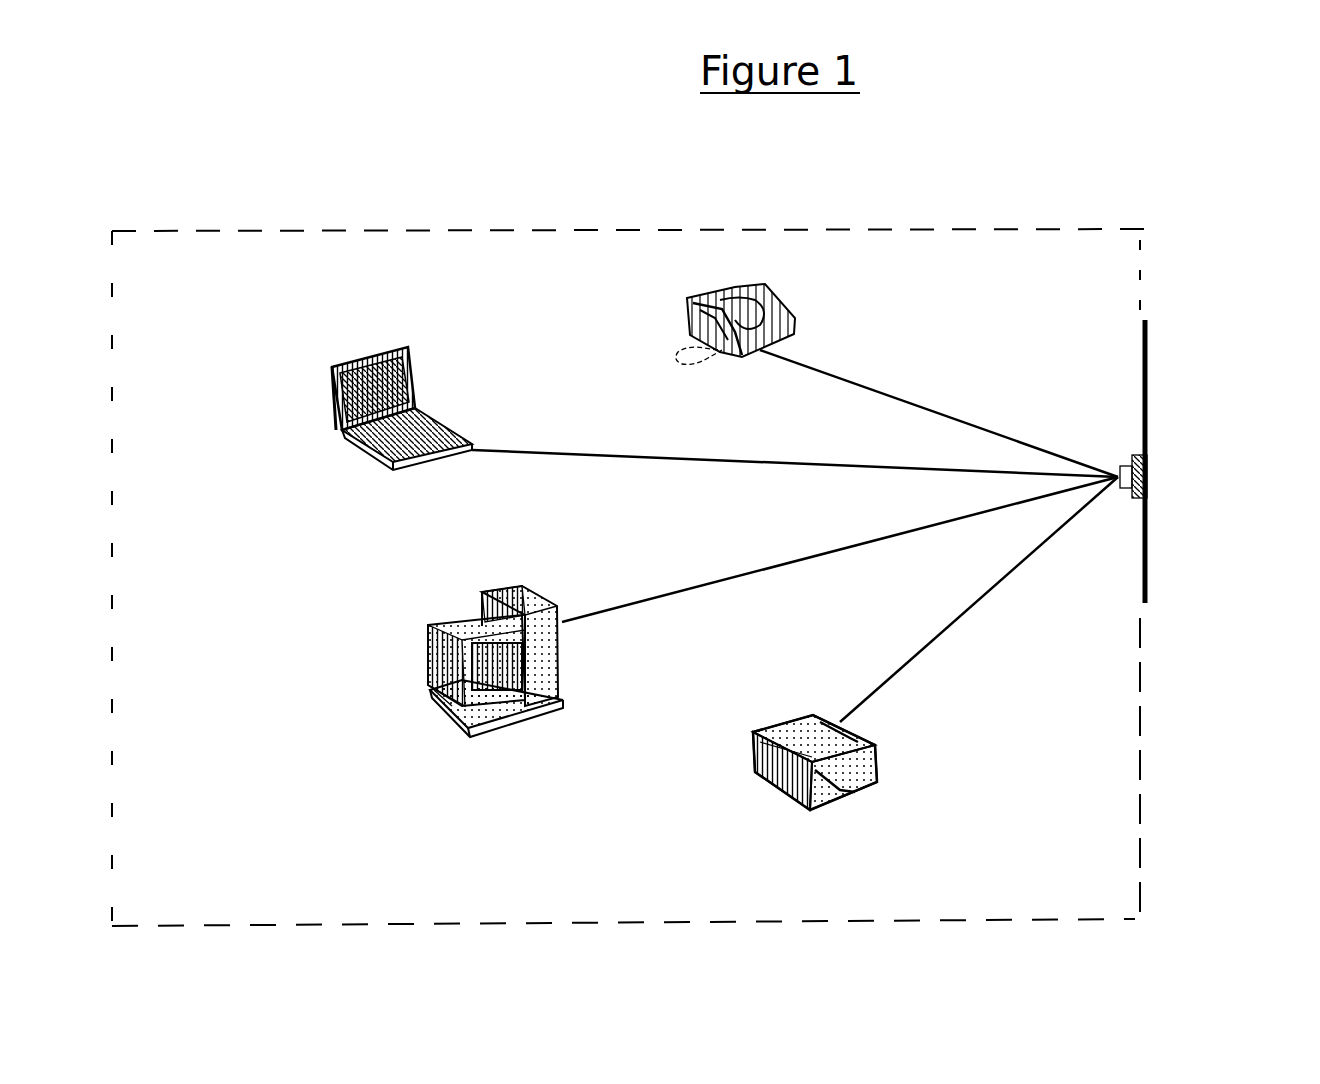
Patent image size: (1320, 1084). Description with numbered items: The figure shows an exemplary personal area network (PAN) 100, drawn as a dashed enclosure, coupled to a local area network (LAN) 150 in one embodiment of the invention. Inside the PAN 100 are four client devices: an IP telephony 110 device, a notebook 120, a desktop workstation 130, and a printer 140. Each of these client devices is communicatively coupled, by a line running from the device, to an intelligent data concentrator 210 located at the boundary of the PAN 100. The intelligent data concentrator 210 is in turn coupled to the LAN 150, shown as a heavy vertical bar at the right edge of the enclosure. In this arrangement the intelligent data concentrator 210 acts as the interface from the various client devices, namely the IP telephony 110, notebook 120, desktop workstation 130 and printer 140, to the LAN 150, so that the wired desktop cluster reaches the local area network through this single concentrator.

The personal area network 100 is at (292, 225).
The IP telephony 110 is at (618, 338).
The notebook 120 is at (237, 452).
The desktop workstation 130 is at (249, 775).
The printer 140 is at (706, 848).
The local area network 150 is at (1292, 523).
The intelligent data concentrator 210 is at (1118, 437).